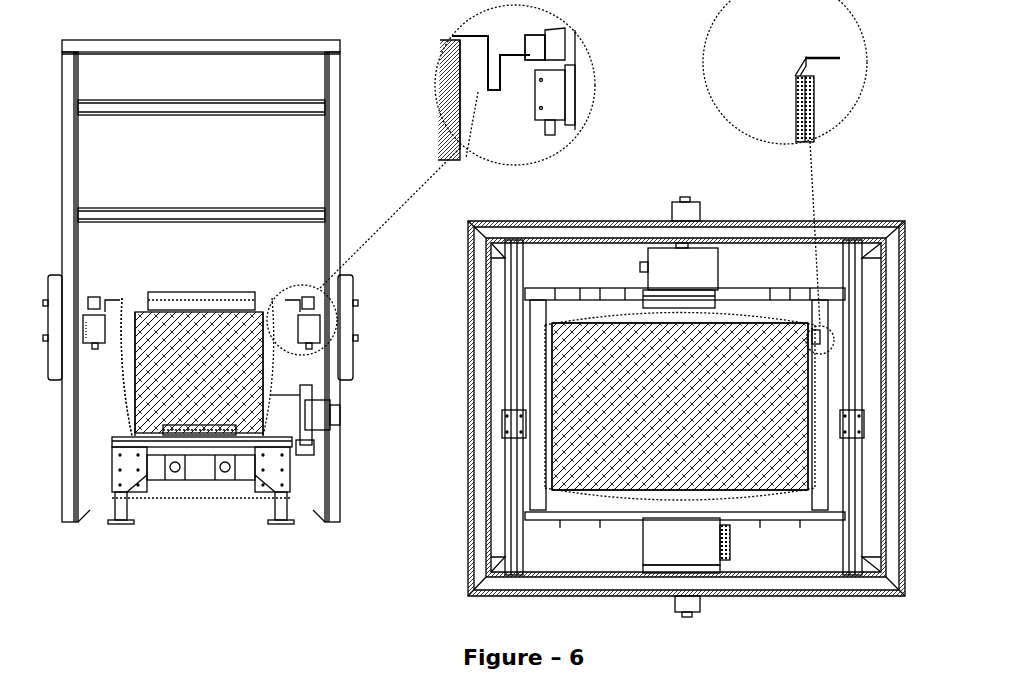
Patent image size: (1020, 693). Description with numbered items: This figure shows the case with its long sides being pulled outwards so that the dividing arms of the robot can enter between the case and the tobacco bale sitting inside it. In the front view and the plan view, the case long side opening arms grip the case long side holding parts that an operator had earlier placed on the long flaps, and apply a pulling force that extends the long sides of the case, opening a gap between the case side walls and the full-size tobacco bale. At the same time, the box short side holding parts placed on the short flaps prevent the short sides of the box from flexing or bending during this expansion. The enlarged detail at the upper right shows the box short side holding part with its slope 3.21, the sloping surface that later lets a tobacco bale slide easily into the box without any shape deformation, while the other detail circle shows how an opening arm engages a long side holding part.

The slope 3.21 is at (798, 68).